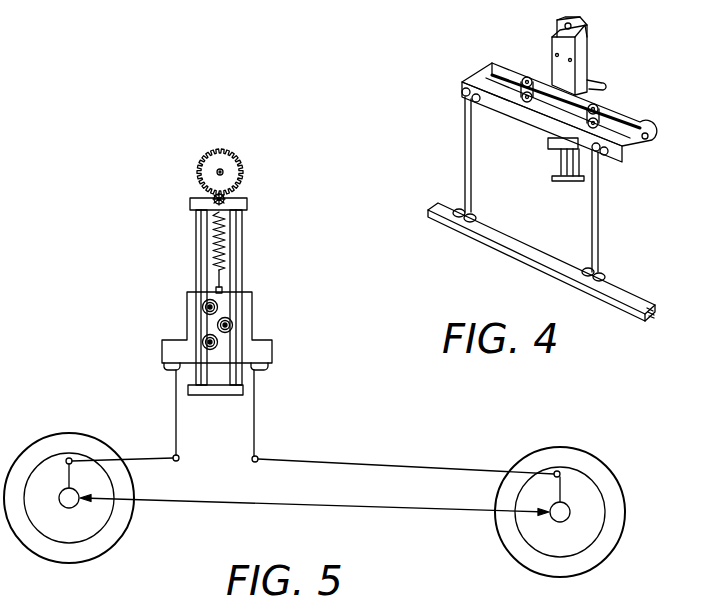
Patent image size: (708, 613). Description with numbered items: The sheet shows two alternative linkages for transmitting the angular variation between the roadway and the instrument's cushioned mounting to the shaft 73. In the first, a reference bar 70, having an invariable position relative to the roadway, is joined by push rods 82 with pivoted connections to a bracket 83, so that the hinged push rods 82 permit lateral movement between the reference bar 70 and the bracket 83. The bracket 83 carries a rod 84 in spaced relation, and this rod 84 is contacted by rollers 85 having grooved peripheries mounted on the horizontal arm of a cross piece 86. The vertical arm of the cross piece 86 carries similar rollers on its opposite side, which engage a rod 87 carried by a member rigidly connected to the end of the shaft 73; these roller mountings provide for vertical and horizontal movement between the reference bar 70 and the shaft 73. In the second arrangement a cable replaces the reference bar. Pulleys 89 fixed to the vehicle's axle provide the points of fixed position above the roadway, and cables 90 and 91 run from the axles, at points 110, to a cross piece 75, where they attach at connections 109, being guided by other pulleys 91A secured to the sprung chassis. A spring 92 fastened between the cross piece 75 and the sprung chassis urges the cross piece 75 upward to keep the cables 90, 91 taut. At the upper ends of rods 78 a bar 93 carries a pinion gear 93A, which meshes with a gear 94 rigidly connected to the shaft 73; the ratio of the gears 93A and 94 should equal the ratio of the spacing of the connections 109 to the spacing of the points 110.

In FIG. 4, the reference bar 70 is at (512, 240).
In FIG. 4, the shaft 73 is at (603, 86).
In FIG. 5, the shaft 73 is at (223, 173).
In FIG. 5, the cross piece 75 is at (168, 338).
In FIG. 5, the rods 78 is at (197, 272).
In FIG. 4, the push rods 82 is at (470, 164).
In FIG. 4, the bracket 83 is at (587, 36).
In FIG. 4, the rod 84 is at (630, 126).
In FIG. 4, the rollers 85 is at (518, 95).
In FIG. 4, the cross piece 86 is at (557, 62).
In FIG. 4, the rod 87 is at (561, 158).
In FIG. 5, the pulleys 89 is at (70, 458).
In FIG. 5, the cable 90 is at (138, 458).
In FIG. 5, the cable 91 is at (374, 463).
In FIG. 5, the pulleys 91A is at (252, 459).
In FIG. 5, the spring 92 is at (222, 250).
In FIG. 5, the bar 93 is at (247, 205).
In FIG. 5, the pinion gear 93A is at (212, 199).
In FIG. 5, the gear 94 is at (238, 178).
In FIG. 5, the connections 109 is at (162, 358).
In FIG. 5, the points 110 is at (64, 490).